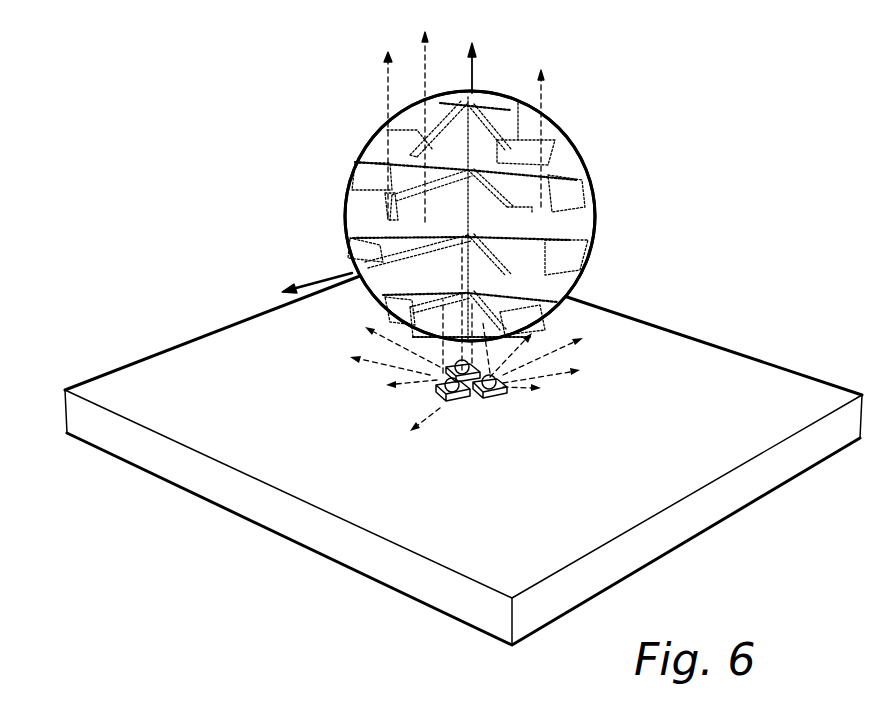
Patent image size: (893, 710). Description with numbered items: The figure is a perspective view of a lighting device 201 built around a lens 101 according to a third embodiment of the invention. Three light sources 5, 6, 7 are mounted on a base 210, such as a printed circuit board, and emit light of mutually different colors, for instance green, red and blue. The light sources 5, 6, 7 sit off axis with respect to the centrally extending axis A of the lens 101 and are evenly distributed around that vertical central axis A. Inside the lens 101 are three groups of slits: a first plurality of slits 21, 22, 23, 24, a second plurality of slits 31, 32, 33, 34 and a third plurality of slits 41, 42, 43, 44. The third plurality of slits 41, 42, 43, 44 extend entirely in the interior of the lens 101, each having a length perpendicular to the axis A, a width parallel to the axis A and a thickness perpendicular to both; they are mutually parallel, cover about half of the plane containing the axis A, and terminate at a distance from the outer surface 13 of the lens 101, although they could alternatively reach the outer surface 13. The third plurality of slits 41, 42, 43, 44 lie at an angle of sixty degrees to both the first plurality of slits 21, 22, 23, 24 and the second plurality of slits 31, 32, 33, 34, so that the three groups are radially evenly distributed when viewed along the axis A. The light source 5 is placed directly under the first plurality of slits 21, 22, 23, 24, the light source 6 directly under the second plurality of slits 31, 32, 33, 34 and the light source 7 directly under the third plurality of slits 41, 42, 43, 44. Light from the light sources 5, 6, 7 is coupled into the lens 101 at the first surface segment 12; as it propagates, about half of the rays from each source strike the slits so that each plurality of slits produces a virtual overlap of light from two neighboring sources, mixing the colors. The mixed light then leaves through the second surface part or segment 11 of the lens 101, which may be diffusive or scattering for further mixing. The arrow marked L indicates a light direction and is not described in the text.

The lighting device 201 is at (139, 204).
The lens 101 is at (347, 202).
The outer surface 13 is at (593, 199).
The second surface part or segment 11 is at (458, 92).
The centrally extending axis A is at (473, 68).
The slit of first plurality of slits 21 is at (410, 122).
The slit of first plurality of slits 22 is at (365, 175).
The slit of first plurality of slits 23 is at (367, 238).
The slit of first plurality of slits 24 is at (380, 305).
The slit of second plurality of slits 31 is at (450, 122).
The slit of second plurality of slits 32 is at (430, 200).
The slit of second plurality of slits 33 is at (440, 265).
The slit of second plurality of slits 34 is at (462, 318).
The slit of third plurality of slits 41 is at (483, 133).
The slit of third plurality of slits 42 is at (500, 210).
The slit of third plurality of slits 43 is at (505, 280).
The slit of third plurality of slits 44 is at (487, 313).
The first surface segment 12 is at (460, 338).
The light source 5 is at (445, 375).
The light source 6 is at (458, 400).
The light source 7 is at (500, 397).
The light direction L is at (323, 278).
The base 210 is at (227, 495).